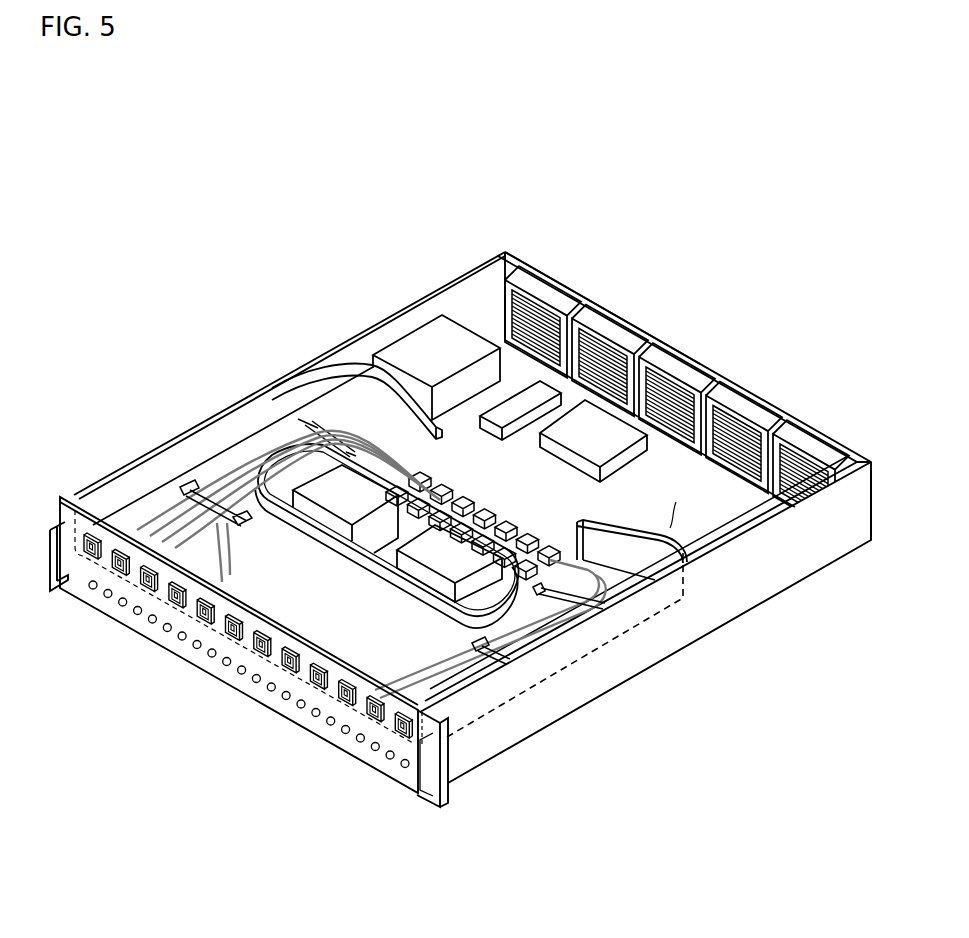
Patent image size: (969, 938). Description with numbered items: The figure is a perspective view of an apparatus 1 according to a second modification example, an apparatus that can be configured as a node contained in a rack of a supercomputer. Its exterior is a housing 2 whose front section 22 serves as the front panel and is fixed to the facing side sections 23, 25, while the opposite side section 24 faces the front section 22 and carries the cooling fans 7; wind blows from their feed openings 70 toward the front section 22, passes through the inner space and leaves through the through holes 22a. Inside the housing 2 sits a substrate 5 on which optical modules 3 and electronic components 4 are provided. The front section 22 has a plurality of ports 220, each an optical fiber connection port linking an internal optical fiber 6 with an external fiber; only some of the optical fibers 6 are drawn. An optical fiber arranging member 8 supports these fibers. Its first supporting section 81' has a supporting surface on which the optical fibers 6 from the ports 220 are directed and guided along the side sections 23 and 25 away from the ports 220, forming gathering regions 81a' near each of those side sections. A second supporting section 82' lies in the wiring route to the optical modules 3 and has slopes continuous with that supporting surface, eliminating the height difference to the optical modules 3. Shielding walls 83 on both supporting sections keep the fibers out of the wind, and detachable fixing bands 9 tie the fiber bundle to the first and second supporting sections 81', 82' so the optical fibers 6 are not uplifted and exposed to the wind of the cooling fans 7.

The apparatus 1 is at (815, 188).
The housing 2 is at (715, 624).
The optical modules 3 is at (525, 537).
The electronic components 4 is at (313, 493).
The substrate 5 is at (733, 518).
The optical fibers 6 is at (583, 556).
The cooling fans 7 is at (800, 440).
The optical fiber arranging member 8 is at (670, 528).
The fixing bands 9 is at (323, 445).
The front section 22 is at (382, 768).
The through holes 22a is at (347, 733).
The side section 23 is at (487, 749).
The side section 24 is at (506, 253).
The side section 25 is at (466, 290).
The feed openings 70 is at (730, 433).
The first supporting section 81' is at (288, 587).
The gathering regions 81a' is at (403, 549).
The second supporting section 82' is at (357, 374).
The shielding walls 83 is at (405, 427).
The ports 220 is at (310, 675).